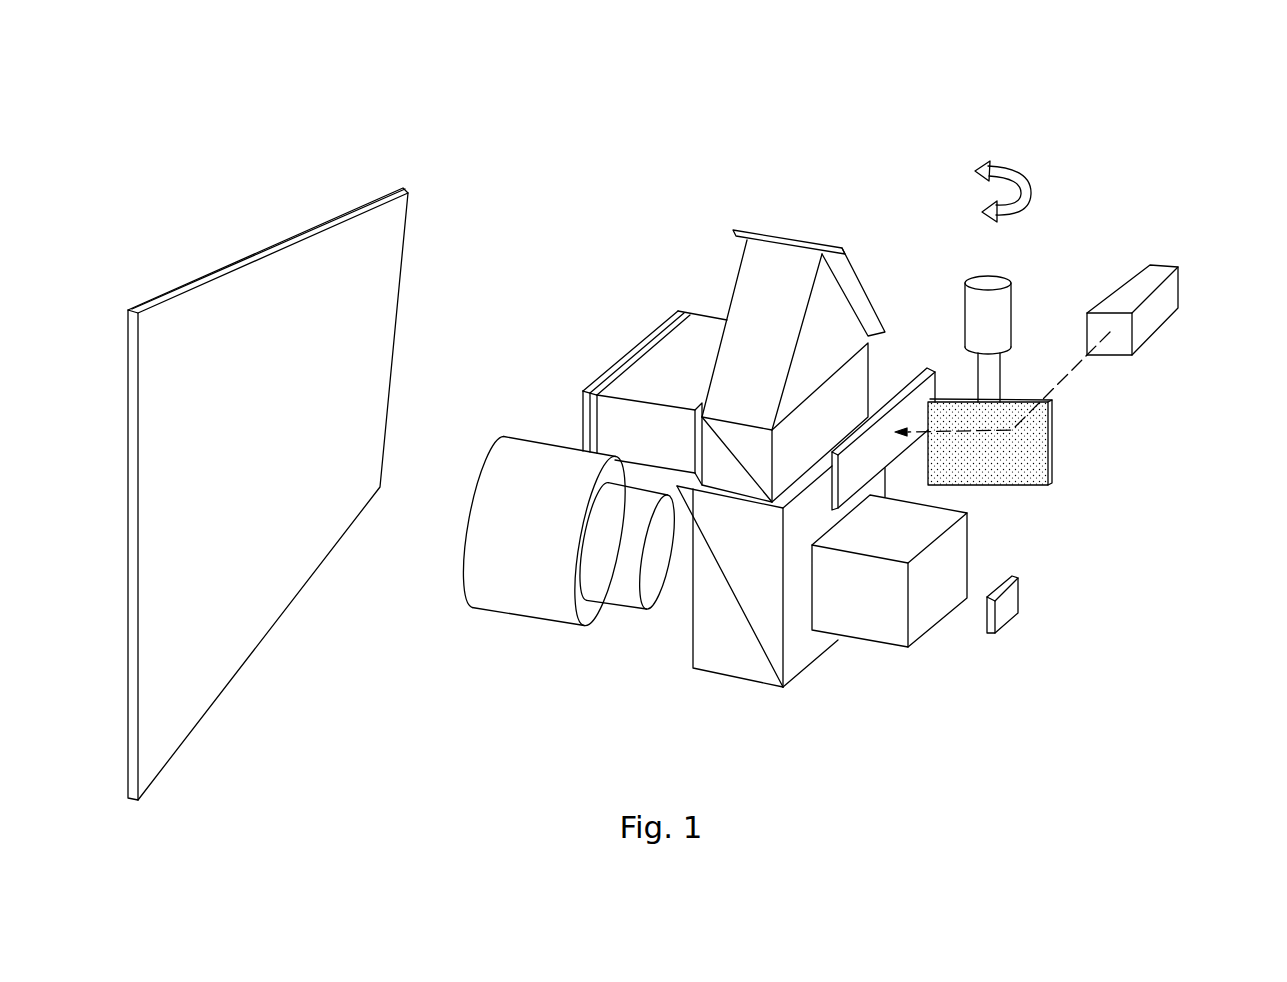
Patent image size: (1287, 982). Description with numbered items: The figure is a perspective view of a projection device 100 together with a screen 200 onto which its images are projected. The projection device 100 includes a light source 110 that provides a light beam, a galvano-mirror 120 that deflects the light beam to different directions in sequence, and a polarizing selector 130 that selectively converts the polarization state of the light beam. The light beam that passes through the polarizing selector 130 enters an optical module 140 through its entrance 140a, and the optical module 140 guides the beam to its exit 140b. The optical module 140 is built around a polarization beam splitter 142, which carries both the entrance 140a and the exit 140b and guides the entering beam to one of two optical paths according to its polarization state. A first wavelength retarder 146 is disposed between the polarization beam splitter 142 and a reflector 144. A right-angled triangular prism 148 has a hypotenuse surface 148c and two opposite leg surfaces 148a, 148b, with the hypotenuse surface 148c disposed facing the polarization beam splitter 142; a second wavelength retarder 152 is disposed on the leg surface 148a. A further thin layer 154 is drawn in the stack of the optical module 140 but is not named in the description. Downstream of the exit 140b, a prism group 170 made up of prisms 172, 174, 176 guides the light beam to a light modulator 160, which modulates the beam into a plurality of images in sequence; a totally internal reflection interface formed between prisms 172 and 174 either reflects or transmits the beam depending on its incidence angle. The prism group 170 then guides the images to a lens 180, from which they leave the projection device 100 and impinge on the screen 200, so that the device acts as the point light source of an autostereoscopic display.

The projection device 100 is at (1015, 130).
The light source 110 is at (1157, 270).
The galvano-mirror 120 is at (992, 297).
The polarizing selector 130 is at (935, 370).
The optical module 140 is at (410, 118).
The entrance 140a is at (913, 260).
The exit 140b is at (611, 318).
The polarization beam splitter 142 is at (662, 304).
The reflector 144 is at (546, 287).
The first wavelength retarder 146 is at (575, 287).
The right-angled triangular prism 148 is at (785, 312).
The leg surface 148a is at (828, 229).
The leg surface 148b is at (691, 219).
The hypotenuse surface 148c is at (808, 245).
The second wavelength retarder 152 is at (838, 192).
The optical layer 154 is at (666, 221).
The light modulator 160 is at (1013, 602).
The prism group 170 is at (821, 627).
The prism 172 is at (763, 625).
The prism 174 is at (717, 638).
The prism 176 is at (889, 617).
The lens 180 is at (518, 590).
The screen 200 is at (228, 317).